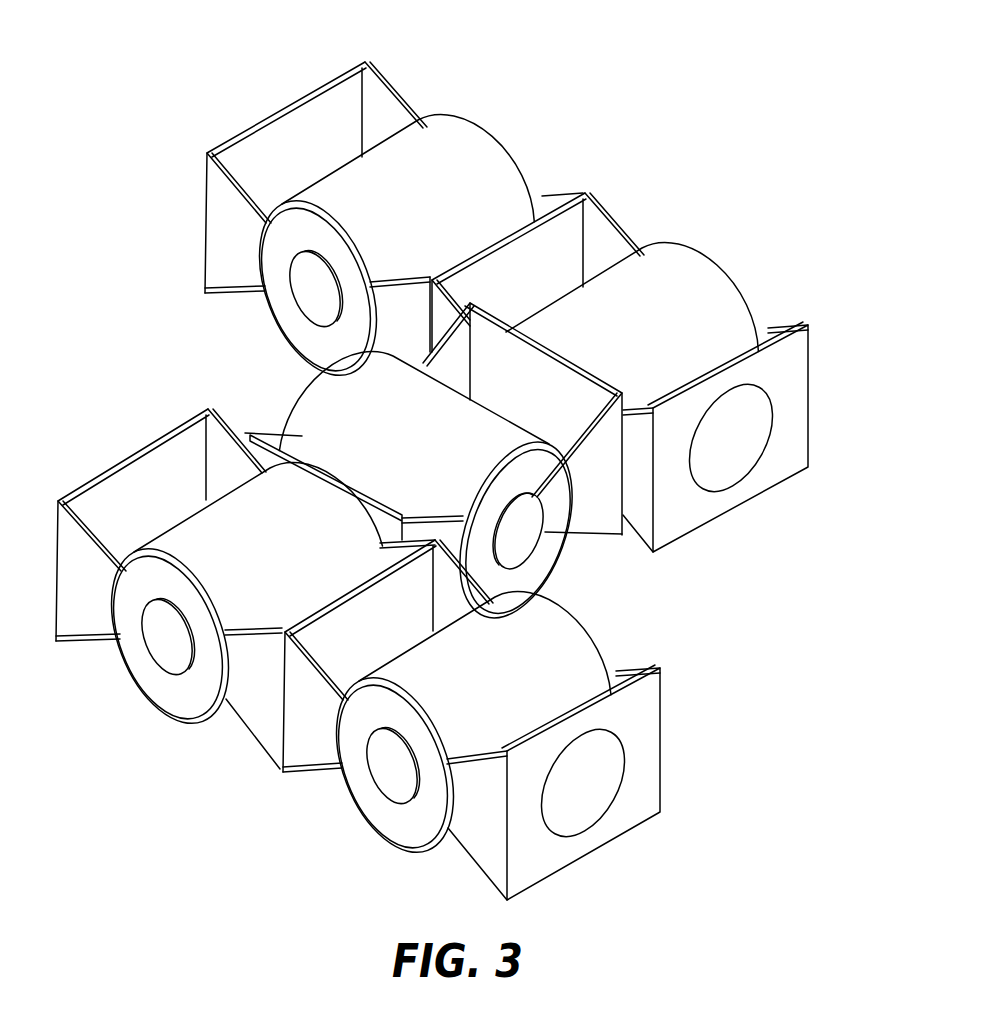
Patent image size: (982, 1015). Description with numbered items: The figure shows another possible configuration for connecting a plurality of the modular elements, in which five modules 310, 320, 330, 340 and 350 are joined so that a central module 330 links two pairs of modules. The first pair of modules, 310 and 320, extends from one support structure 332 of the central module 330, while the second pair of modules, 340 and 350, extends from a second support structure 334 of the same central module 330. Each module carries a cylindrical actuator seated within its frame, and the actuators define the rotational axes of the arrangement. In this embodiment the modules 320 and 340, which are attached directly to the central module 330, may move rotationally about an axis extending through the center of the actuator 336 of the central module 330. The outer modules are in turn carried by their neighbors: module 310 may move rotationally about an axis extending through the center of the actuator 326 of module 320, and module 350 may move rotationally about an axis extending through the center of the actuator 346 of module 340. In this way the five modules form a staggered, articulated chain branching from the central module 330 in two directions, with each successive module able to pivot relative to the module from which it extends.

The module 310 is at (625, 620).
The module 320 is at (245, 575).
The actuator 326 is at (229, 524).
The central module 330 is at (409, 468).
The support structure 332 is at (256, 433).
The second support structure 334 is at (596, 518).
The actuator 336 is at (455, 428).
The module 340 is at (621, 367).
The actuator 346 is at (716, 302).
The module 350 is at (523, 103).